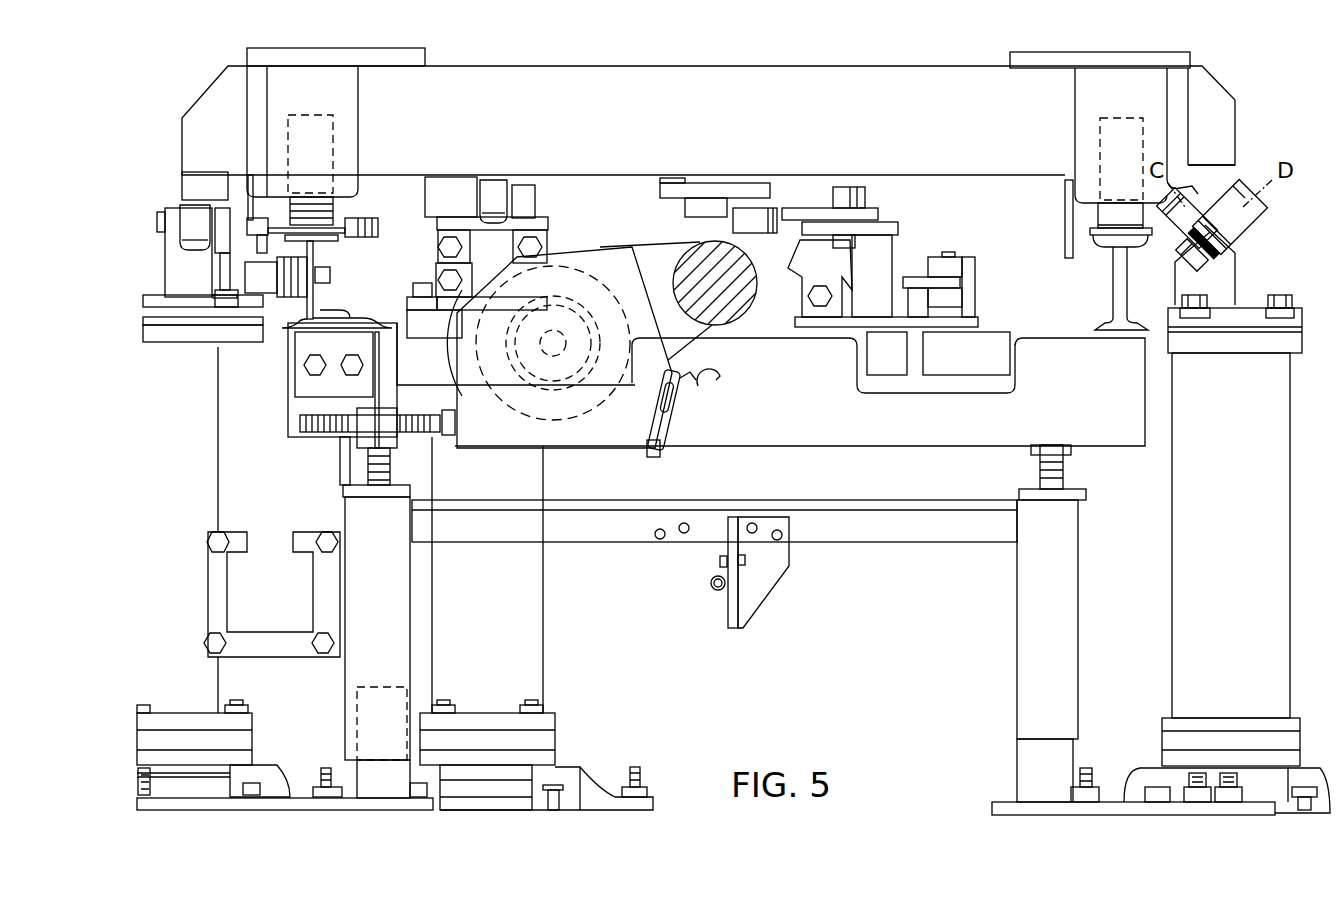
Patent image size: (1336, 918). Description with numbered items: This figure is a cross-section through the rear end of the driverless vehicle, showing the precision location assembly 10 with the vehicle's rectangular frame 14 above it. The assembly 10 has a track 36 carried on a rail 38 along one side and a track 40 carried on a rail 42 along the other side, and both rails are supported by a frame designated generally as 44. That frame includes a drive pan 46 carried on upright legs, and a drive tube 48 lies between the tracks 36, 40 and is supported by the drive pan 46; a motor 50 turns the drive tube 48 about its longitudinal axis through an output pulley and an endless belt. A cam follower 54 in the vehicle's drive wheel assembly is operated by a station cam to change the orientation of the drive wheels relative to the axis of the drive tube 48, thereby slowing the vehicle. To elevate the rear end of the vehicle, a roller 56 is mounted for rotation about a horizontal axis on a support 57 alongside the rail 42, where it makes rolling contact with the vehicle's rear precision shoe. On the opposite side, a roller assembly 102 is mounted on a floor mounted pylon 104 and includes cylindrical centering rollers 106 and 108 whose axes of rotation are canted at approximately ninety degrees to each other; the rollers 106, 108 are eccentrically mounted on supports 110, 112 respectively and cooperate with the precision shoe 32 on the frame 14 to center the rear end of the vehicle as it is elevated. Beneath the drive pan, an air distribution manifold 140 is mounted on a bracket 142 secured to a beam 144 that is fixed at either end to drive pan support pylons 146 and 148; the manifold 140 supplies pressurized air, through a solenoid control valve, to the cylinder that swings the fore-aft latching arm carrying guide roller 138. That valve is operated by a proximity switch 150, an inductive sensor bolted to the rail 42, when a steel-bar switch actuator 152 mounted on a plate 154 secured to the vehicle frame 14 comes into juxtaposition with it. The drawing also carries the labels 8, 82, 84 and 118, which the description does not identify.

The precision location assembly 10 is at (832, 60).
The frame 14 is at (958, 130).
The precision shoe 32 is at (1214, 166).
The block 8 is at (195, 190).
The plate 154 is at (252, 185).
The switch actuator 152 is at (270, 247).
The roller 56 is at (182, 226).
The support 57 is at (175, 300).
The proximity switch 150 is at (267, 290).
The track 40 is at (378, 228).
The rail 42 is at (318, 308).
The guide roller 138 is at (482, 190).
The motor 50 is at (567, 247).
The drive tube 48 is at (750, 288).
The drive pan 46 is at (788, 389).
The frame 44 is at (876, 450).
The cam follower 54 is at (778, 210).
The track 36 is at (1090, 233).
The rail 38 is at (1113, 300).
The arm 82 is at (1185, 180).
The link 84 is at (1240, 188).
The roller assembly 102 is at (1215, 216).
The centering roller 106 is at (1172, 225).
The centering roller 108 is at (1247, 228).
The support 112 is at (1238, 290).
The support 110 is at (1205, 312).
The floor mounted pylon 104 is at (1242, 462).
The beam 144 is at (927, 535).
The bracket 142 is at (774, 574).
The air distribution manifold 140 is at (710, 584).
The drive pan support pylon 148 is at (1073, 590).
The drive pan support pylon 146 is at (368, 657).
The column 118 is at (543, 650).